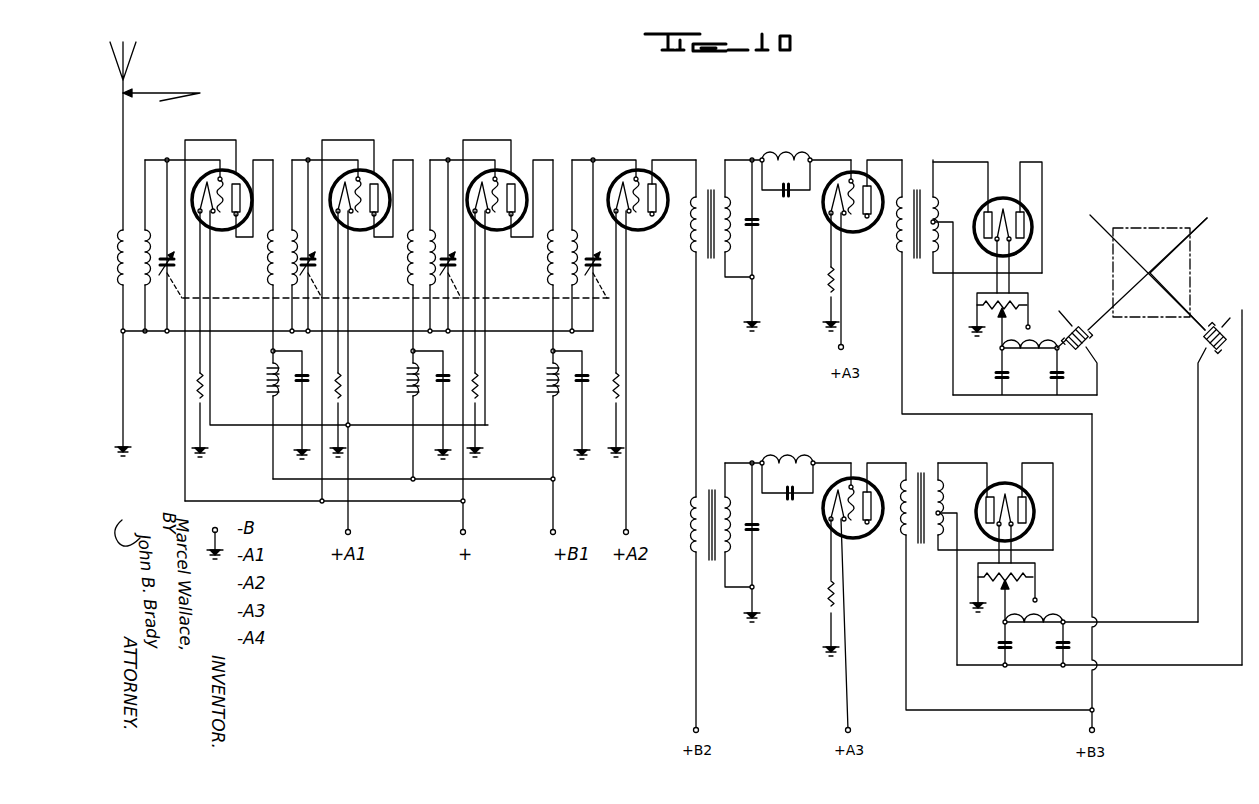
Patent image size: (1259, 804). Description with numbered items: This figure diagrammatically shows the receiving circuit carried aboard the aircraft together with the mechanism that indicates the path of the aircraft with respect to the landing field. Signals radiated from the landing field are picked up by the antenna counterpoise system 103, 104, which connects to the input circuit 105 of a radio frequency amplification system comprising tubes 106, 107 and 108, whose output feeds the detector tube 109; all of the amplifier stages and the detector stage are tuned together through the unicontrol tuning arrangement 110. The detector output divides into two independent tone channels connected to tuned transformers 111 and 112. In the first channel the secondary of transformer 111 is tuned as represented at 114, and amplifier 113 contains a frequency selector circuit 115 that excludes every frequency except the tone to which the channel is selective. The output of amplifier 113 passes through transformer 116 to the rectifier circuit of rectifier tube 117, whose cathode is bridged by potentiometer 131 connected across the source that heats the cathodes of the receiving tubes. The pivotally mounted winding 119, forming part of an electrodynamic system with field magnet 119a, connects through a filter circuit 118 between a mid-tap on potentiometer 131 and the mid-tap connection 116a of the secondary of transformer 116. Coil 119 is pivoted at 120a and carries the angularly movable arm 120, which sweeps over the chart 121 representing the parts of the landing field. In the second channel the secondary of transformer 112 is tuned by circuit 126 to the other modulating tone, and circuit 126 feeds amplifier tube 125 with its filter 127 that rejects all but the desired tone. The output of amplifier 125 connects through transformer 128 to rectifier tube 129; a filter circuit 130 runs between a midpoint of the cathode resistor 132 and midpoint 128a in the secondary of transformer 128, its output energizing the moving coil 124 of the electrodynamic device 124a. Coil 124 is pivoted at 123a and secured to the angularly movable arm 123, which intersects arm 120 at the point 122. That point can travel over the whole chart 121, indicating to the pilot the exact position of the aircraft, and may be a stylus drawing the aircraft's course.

The antenna 103 is at (138, 74).
The counterpoise 104 is at (128, 441).
The input circuit 105 is at (154, 185).
The radio frequency amplifier tube 106 is at (234, 172).
The radio frequency amplifier tube 107 is at (372, 172).
The radio frequency amplifier tube 108 is at (512, 172).
The detector tube 109 is at (642, 172).
The unicontrol tuning arrangement 110 is at (246, 297).
The tuned transformer 111 is at (708, 175).
The tuned transformer 112 is at (716, 480).
The amplifier 113 is at (850, 172).
The tuning circuit 114 is at (742, 237).
The frequency selector circuit 115 is at (788, 152).
The transformer 116 is at (910, 175).
The mid-tap connection 116a is at (938, 222).
The rectifier tube 117 is at (1012, 198).
The filter circuit 118 is at (1025, 367).
The pivotally mounted winding 119 is at (1097, 342).
The field magnet 119a is at (1085, 353).
The angularly movable arm 120 is at (1128, 287).
The pivot 120a is at (1082, 326).
The chart 121 is at (1122, 226).
The intersection point 122 is at (1150, 268).
The angularly movable arm 123 is at (1175, 287).
The pivot 123a is at (1216, 326).
The moving coil 124 is at (1206, 350).
The electrodynamic device 124a is at (1216, 360).
The amplifier tube 125 is at (828, 512).
The tuning circuit 126 is at (748, 540).
The filter 127 is at (792, 455).
The transformer 128 is at (920, 475).
The midpoint 128a is at (942, 513).
The rectifier tube 129 is at (1022, 487).
The filter circuit 130 is at (1099, 640).
The potentiometer 131 is at (976, 314).
The cathode resistor 132 is at (1012, 572).